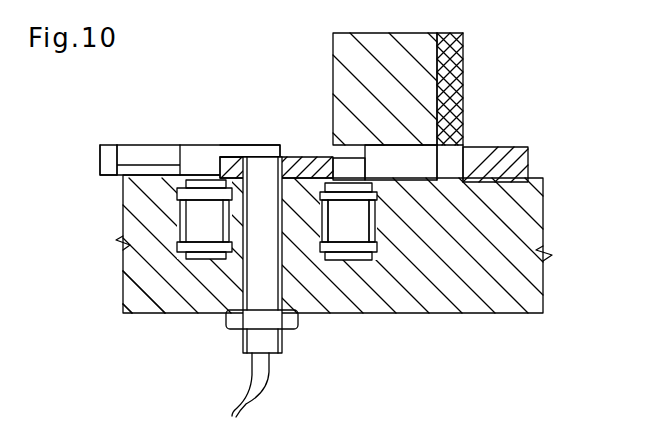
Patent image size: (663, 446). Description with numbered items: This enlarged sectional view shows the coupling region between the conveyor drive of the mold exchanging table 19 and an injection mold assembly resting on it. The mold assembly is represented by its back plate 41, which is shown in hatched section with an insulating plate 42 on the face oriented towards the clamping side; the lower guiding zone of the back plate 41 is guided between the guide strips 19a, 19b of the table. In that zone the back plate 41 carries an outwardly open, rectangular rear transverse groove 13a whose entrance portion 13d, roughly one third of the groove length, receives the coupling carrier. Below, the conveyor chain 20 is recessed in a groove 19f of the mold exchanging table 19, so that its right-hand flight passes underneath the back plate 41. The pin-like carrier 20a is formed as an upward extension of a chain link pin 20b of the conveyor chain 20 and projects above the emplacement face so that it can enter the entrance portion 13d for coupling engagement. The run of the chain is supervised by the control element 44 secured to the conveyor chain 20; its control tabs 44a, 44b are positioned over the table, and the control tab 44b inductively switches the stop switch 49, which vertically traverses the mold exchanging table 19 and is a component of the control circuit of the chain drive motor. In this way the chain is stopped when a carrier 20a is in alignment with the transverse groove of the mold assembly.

The mold exchanging table 19 is at (502, 314).
The guide strip 19a is at (306, 160).
The guide strip 19b is at (497, 167).
The groove 19f is at (177, 228).
The conveyor chain 20 is at (178, 211).
The carrier 20a is at (352, 170).
The chain link pin 20b is at (342, 225).
The rear transverse groove 13a is at (405, 165).
The entrance portion 13d is at (357, 150).
The back plate 41 is at (383, 80).
The insulating plate 42 is at (412, 92).
The control element 44 is at (197, 144).
The control tab 44a is at (108, 163).
The control tab 44b is at (253, 150).
The stop switch 49 is at (262, 342).